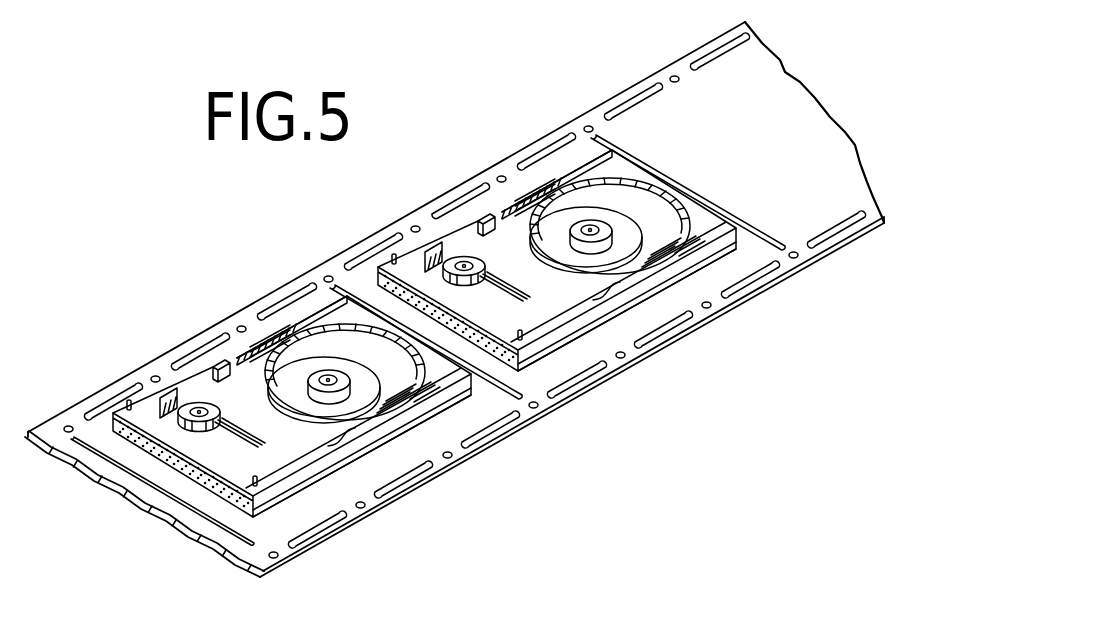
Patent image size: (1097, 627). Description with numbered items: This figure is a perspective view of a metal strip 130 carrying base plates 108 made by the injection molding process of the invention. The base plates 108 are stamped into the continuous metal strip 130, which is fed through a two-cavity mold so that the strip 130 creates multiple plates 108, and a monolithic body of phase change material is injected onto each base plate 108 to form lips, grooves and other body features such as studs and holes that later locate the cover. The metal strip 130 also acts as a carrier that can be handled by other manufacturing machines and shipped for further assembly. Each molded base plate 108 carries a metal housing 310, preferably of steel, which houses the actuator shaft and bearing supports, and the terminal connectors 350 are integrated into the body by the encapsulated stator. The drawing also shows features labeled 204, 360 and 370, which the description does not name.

The base plate 108 is at (587, 330).
The metal strip 130 is at (678, 125).
The disk drive 204 is at (553, 235).
The metal housing 310 is at (435, 247).
The terminal connectors 350 is at (112, 428).
The guide rail 360 is at (350, 462).
The locating tab 370 is at (227, 362).